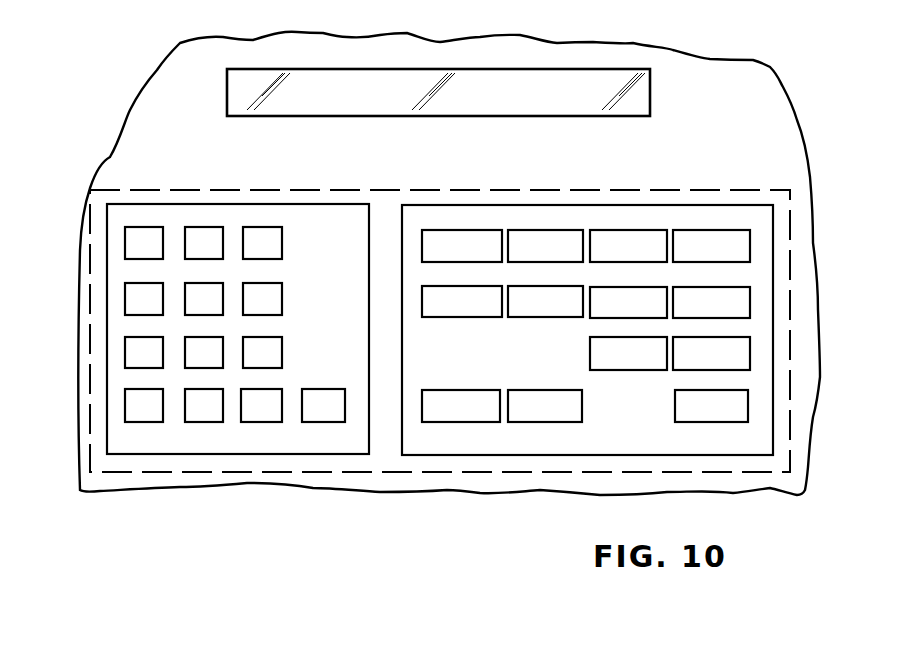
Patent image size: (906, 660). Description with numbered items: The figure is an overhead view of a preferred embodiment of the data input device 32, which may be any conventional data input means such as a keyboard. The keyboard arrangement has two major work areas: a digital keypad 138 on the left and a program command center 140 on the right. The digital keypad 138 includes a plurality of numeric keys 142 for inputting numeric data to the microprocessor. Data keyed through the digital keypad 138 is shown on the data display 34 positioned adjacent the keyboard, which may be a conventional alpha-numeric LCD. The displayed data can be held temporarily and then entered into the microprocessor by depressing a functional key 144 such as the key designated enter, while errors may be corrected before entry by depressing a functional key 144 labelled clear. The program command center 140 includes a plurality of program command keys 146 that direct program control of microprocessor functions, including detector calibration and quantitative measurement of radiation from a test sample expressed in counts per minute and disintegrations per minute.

The data input device 32 is at (460, 500).
The data display 34 is at (598, 70).
The digital keypad 138 is at (223, 205).
The program command center 140 is at (583, 205).
The numeric keys 142 is at (125, 297).
The functional key 144 is at (325, 422).
The program command keys 146 is at (750, 310).